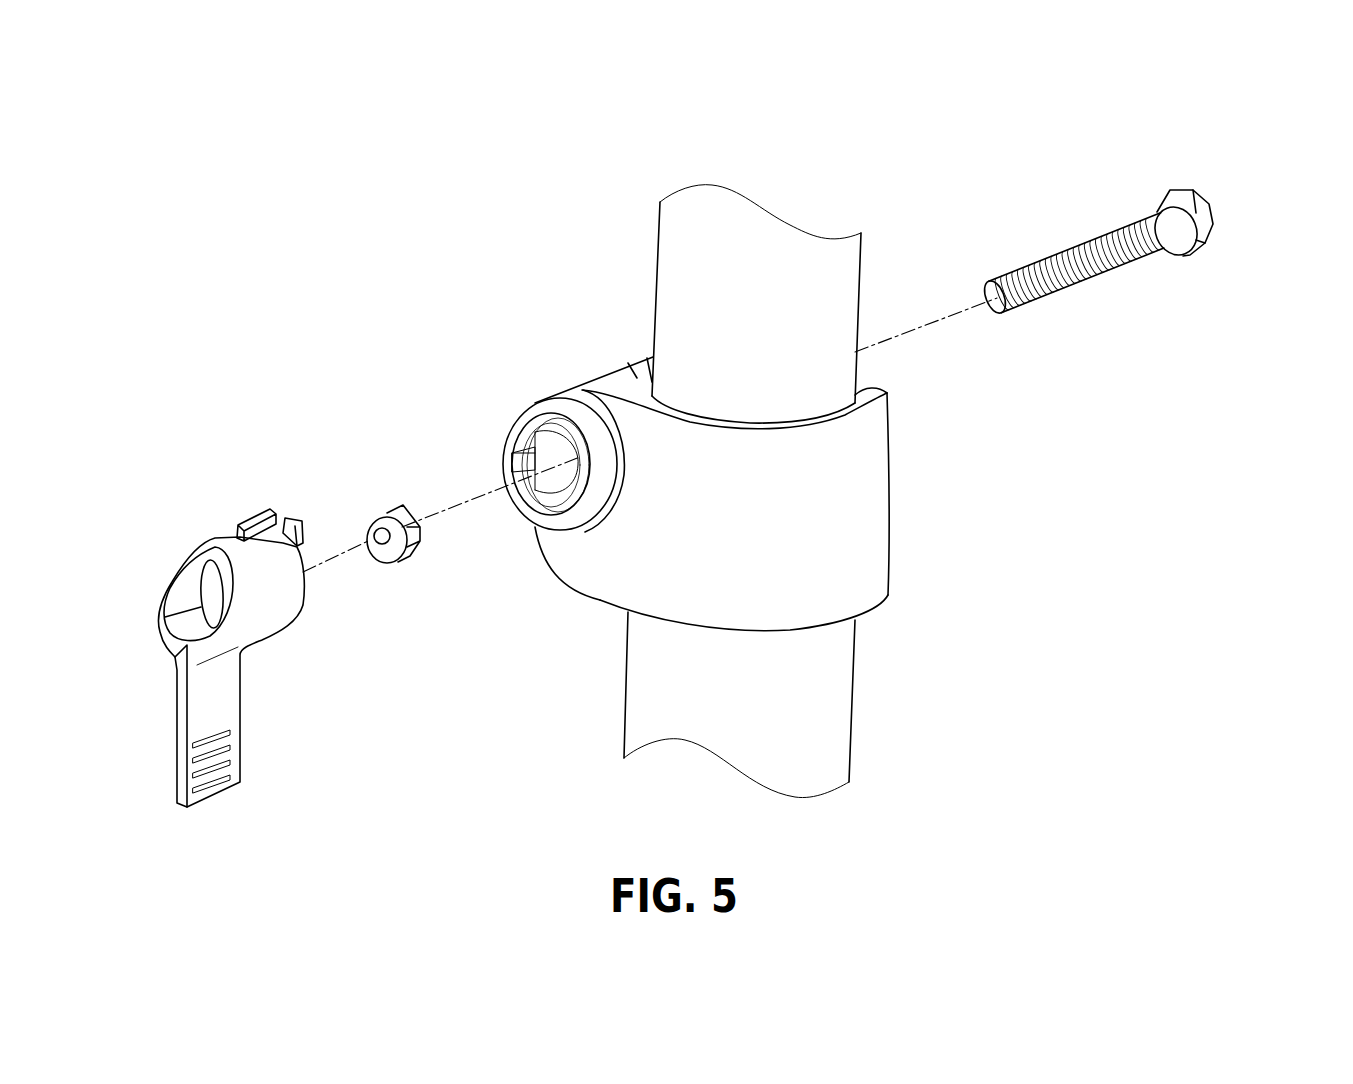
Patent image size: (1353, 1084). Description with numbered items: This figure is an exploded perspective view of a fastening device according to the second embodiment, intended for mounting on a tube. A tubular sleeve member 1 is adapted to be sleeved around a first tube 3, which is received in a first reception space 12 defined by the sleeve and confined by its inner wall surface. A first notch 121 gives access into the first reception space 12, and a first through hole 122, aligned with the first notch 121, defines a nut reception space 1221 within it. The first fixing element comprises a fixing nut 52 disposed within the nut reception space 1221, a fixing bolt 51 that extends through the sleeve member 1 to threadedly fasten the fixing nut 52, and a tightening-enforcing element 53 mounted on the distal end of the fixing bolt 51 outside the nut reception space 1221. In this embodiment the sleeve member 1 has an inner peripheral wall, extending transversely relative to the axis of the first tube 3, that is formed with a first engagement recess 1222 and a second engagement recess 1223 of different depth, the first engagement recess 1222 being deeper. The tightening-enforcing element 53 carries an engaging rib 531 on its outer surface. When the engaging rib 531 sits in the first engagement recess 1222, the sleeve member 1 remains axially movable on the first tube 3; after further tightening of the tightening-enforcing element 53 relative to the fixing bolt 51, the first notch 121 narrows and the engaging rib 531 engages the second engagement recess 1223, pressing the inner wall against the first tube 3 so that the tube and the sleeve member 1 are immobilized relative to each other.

The tubular sleeve member 1 is at (1100, 138).
The first tube 3 is at (672, 270).
The first reception space 12 is at (873, 403).
The first notch 121 is at (640, 380).
The first through hole 122 is at (575, 465).
The nut reception space 1221 is at (553, 440).
The first engagement recess 1222 is at (530, 450).
The second engagement recess 1223 is at (513, 467).
The fixing bolt 51 is at (1213, 203).
The fixing nut 52 is at (400, 516).
The tightening-enforcing element 53 is at (207, 697).
The engaging rib 531 is at (297, 533).